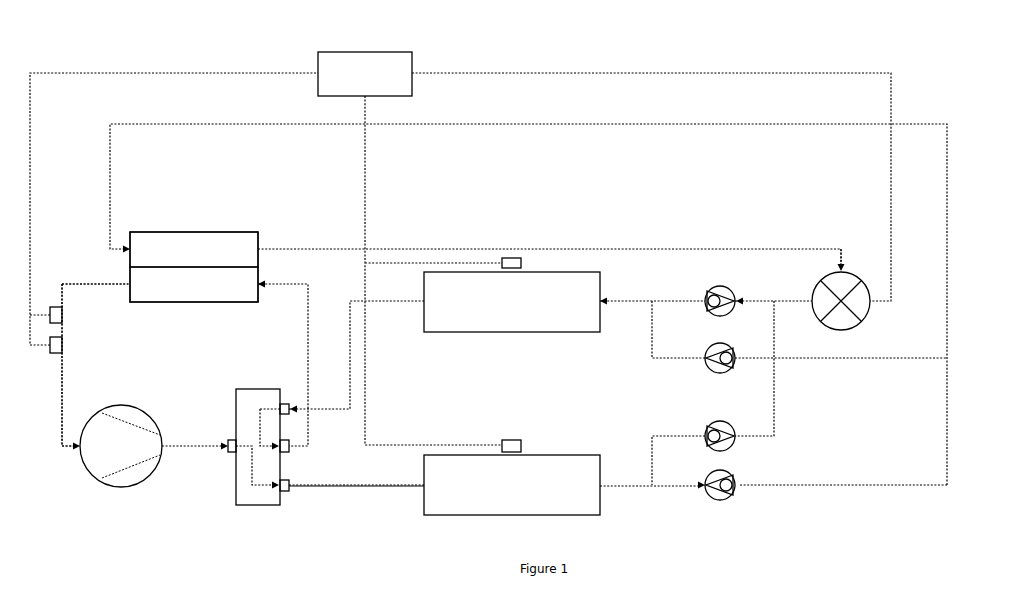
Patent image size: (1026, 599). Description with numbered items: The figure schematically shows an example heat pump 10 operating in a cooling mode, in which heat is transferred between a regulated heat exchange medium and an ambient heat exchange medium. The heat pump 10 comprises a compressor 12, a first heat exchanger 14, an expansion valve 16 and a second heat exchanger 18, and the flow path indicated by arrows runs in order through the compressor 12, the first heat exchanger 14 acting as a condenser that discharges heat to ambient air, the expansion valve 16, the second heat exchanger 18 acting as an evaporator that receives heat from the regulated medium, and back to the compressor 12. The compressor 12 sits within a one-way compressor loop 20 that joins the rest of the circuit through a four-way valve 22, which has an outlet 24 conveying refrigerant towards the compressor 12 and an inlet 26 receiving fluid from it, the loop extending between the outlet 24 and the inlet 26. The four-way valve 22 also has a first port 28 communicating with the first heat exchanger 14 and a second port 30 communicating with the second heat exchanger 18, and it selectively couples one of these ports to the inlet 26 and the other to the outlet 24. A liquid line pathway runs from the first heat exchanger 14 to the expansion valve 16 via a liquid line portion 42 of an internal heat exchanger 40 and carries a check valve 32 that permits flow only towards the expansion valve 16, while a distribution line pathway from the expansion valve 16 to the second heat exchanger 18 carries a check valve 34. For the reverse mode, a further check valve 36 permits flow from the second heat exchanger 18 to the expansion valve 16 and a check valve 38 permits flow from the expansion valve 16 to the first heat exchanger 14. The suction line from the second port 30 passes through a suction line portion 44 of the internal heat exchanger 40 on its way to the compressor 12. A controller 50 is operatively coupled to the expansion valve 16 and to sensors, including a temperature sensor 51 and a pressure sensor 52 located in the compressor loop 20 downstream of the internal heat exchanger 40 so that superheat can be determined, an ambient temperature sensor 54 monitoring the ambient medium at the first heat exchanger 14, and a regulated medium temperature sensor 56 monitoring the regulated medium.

The heat pump 10 is at (68, 58).
The compressor 12 is at (158, 468).
The first heat exchanger 14 is at (513, 517).
The expansion valve 16 is at (864, 319).
The second heat exchanger 18 is at (496, 332).
The one-way compressor loop 20 is at (78, 276).
The four-way valve 22 is at (259, 461).
The outlet 24 is at (289, 453).
The inlet 26 is at (228, 453).
The first port 28 is at (290, 492).
The second port 30 is at (289, 404).
The check valve 32 is at (723, 503).
The check valve 34 is at (725, 316).
The check valve 36 is at (726, 375).
The check valve 38 is at (728, 451).
The internal heat exchanger 40 is at (194, 284).
The liquid line portion 42 is at (194, 249).
The suction line portion 44 is at (211, 321).
The controller 50 is at (318, 60).
The temperature sensor 51 is at (50, 311).
The pressure sensor 52 is at (49, 354).
The ambient temperature sensor 54 is at (522, 444).
The regulated medium temperature sensor 56 is at (522, 263).